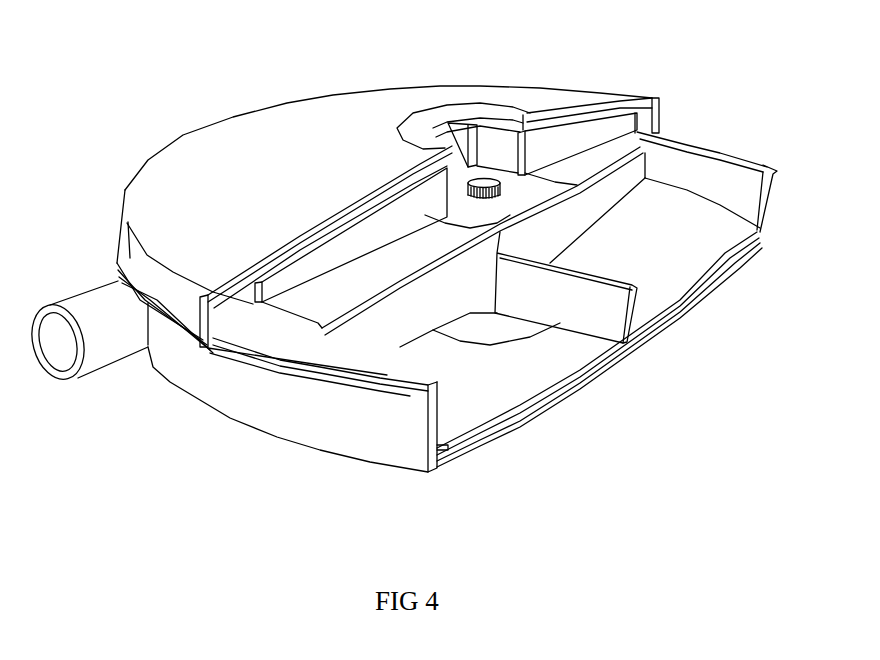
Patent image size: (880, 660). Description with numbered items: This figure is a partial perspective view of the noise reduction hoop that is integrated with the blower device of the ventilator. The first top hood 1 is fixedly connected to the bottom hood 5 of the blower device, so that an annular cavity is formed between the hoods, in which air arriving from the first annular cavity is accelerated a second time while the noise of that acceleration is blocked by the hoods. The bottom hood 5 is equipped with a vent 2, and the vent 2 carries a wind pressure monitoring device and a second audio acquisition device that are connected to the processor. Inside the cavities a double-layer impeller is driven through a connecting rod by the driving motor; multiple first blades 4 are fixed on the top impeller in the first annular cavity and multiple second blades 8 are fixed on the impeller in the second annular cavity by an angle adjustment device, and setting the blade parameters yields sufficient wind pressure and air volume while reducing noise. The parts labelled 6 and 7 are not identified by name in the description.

The first top hood 1 is at (233, 185).
The vent 2 is at (106, 321).
The first blades 4 is at (553, 142).
The bottom hood 5 is at (338, 410).
The side rim wall 6 is at (692, 250).
The partition 7 is at (630, 152).
The second blades 8 is at (580, 311).